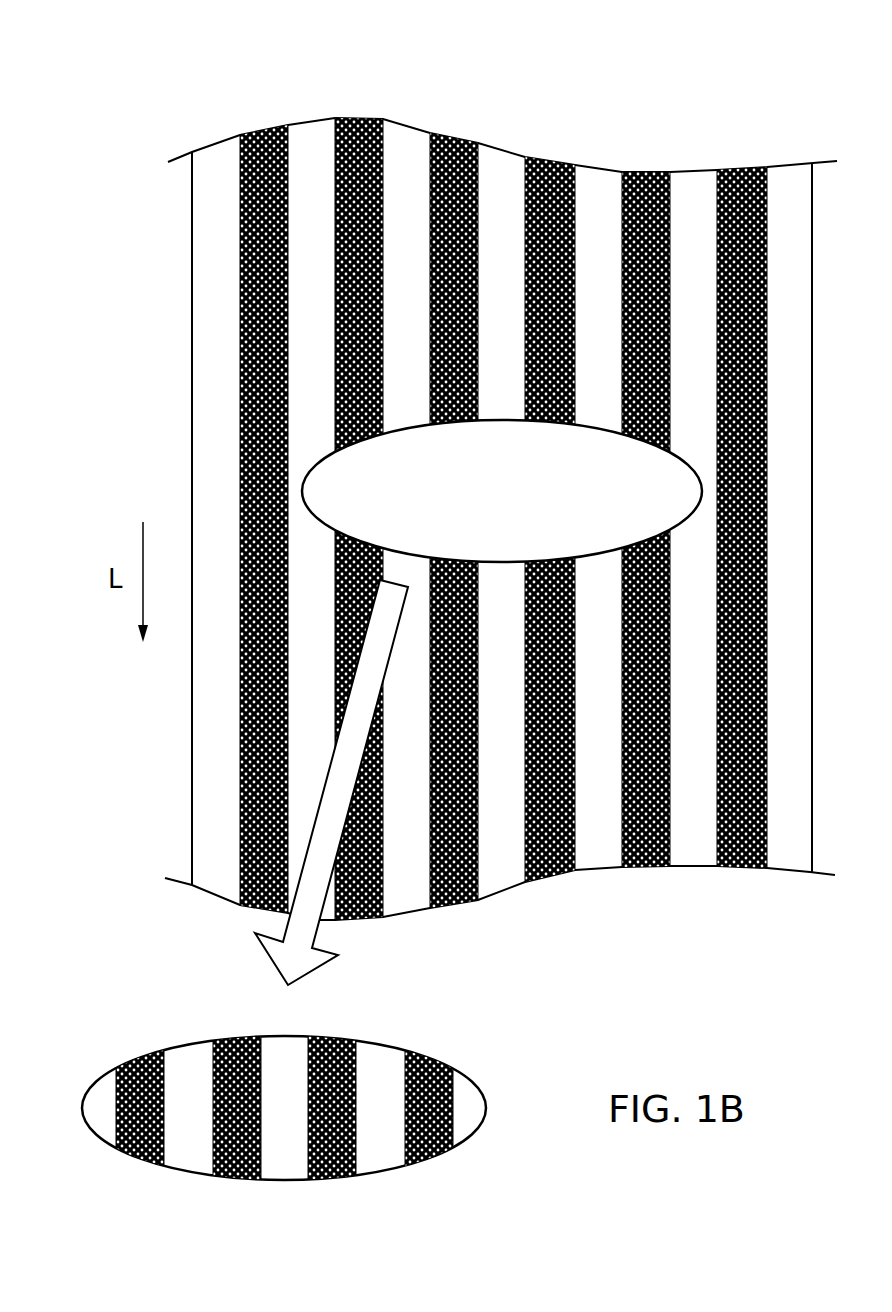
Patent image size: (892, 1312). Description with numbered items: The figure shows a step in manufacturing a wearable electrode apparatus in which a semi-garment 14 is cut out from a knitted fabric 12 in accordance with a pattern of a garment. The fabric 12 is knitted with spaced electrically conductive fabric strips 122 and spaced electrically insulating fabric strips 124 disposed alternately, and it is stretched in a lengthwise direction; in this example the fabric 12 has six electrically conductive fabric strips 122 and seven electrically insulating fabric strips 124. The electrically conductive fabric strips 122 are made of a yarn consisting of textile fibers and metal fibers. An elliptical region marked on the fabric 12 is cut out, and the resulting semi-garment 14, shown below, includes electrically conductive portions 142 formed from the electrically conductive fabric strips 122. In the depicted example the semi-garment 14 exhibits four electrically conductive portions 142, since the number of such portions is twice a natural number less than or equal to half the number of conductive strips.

The fabric 12 is at (477, 480).
The electrically conductive fabric strips 122 is at (238, 255).
The electrically insulating fabric strips 124 is at (215, 303).
The semi-garment 14 is at (264, 1089).
The electrically conductive portions 142 is at (148, 1057).